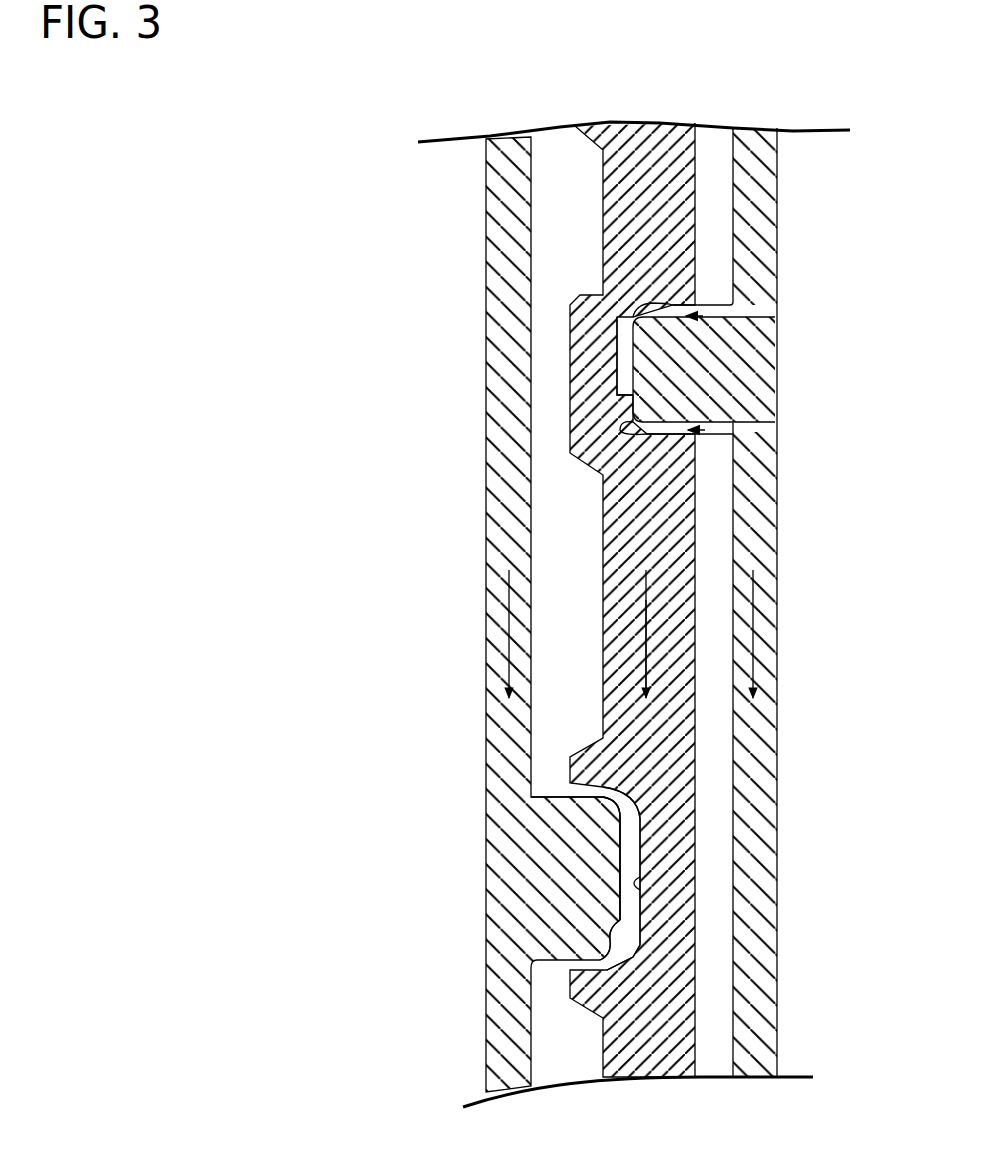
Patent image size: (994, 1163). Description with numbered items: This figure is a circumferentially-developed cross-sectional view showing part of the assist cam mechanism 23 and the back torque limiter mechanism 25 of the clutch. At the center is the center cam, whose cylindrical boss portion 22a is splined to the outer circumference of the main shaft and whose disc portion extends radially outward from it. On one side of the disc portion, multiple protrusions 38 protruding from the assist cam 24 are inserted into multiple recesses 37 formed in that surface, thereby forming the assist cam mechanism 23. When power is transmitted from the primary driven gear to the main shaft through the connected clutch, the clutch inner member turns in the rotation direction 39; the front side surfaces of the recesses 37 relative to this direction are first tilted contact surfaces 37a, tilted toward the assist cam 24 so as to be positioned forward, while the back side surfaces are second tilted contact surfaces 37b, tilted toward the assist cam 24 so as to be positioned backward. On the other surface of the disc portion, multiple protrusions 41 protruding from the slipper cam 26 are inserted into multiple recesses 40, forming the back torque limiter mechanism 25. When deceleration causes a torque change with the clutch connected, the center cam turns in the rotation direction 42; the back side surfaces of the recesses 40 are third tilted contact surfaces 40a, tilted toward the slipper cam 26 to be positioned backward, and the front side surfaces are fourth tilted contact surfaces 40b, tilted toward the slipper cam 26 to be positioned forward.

The boss portion 22a is at (642, 148).
The assist cam mechanism 23 is at (585, 795).
The assist cam 24 is at (498, 363).
The back torque limiter mechanism 25 is at (703, 317).
The slipper cam 26 is at (757, 414).
The recesses 37 is at (634, 886).
The first tilted contact surfaces 37a is at (612, 960).
The second tilted contact surfaces 37b is at (612, 803).
The protrusions 38 is at (603, 848).
The rotation direction 39 is at (507, 630).
The recesses 40 is at (636, 394).
The third tilted contact surfaces 40a is at (643, 317).
The fourth tilted contact surfaces 40b is at (625, 416).
The protrusions 41 is at (650, 355).
The rotation direction 42 is at (647, 643).